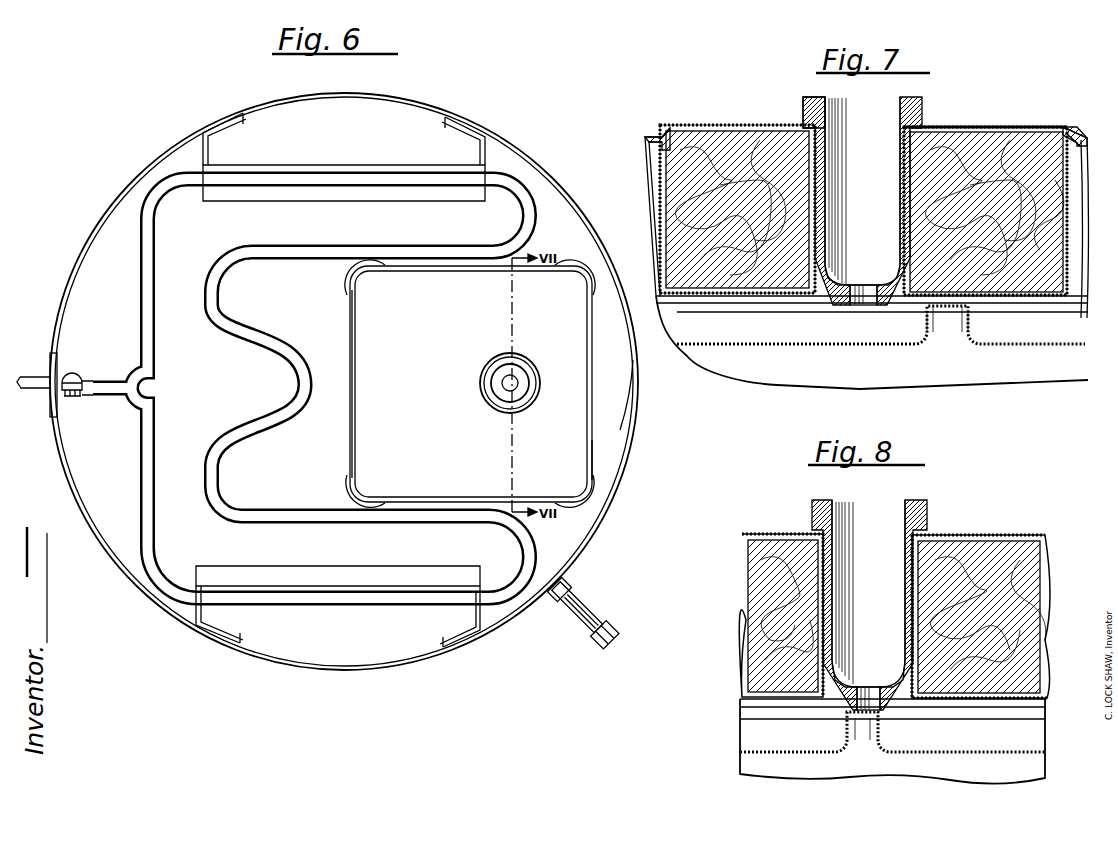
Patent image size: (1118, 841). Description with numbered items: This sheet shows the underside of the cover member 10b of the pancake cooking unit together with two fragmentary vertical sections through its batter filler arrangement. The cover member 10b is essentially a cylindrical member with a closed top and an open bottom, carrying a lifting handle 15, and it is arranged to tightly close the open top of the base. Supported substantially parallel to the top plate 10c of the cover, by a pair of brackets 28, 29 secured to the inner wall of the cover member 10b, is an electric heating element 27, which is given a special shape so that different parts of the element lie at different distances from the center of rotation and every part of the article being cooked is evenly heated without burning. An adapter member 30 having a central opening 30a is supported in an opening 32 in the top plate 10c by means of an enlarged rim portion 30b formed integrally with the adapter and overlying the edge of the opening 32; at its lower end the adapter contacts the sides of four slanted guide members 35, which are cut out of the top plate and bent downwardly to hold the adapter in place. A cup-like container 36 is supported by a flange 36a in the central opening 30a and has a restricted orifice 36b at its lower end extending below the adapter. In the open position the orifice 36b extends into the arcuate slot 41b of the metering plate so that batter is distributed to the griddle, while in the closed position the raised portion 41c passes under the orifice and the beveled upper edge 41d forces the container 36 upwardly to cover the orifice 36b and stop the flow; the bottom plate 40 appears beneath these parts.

In FIG. 6, the cover member 10b is at (382, 668).
In FIG. 6, the top plate 10c is at (604, 477).
In FIG. 7, the top plate 10c is at (644, 135).
In FIG. 6, the lifting handle 15 is at (585, 608).
In FIG. 6, the electric heating element 27 is at (233, 333).
In FIG. 6, the bracket 28 is at (308, 200).
In FIG. 6, the bracket 29 is at (375, 540).
In FIG. 6, the adapter member 30 is at (355, 400).
In FIG. 7, the adapter member 30 is at (1028, 125).
In FIG. 8, the adapter member 30 is at (997, 537).
In FIG. 7, the central opening 30a is at (920, 113).
In FIG. 6, the enlarged rim portion 30b is at (358, 312).
In FIG. 7, the enlarged rim portion 30b is at (660, 126).
In FIG. 6, the opening 32 is at (612, 396).
In FIG. 7, the opening 32 is at (658, 155).
In FIG. 7, the guide member 35 is at (658, 222).
In FIG. 6, the cup-like container 36 is at (527, 411).
In FIG. 7, the cup-like container 36 is at (863, 117).
In FIG. 8, the cup-like container 36 is at (927, 517).
In FIG. 7, the flange 36a is at (810, 97).
In FIG. 6, the restricted orifice 36b is at (503, 383).
In FIG. 7, the restricted orifice 36b is at (866, 306).
In FIG. 8, the restricted orifice 36b is at (863, 720).
In FIG. 7, the bottom plate 40 is at (1032, 335).
In FIG. 8, the bottom plate 40 is at (943, 753).
In FIG. 7, the arcuate slot 41b is at (795, 305).
In FIG. 7, the raised portion 41c is at (958, 316).
In FIG. 8, the raised portion 41c is at (873, 717).
In FIG. 7, the beveled upper edge 41d is at (940, 310).
In FIG. 8, the beveled upper edge 41d is at (840, 717).